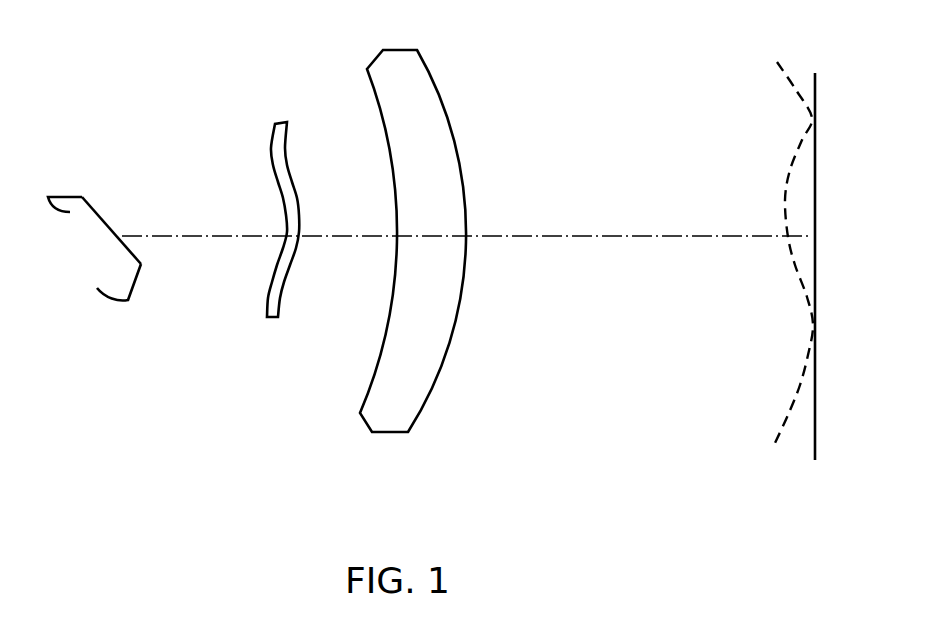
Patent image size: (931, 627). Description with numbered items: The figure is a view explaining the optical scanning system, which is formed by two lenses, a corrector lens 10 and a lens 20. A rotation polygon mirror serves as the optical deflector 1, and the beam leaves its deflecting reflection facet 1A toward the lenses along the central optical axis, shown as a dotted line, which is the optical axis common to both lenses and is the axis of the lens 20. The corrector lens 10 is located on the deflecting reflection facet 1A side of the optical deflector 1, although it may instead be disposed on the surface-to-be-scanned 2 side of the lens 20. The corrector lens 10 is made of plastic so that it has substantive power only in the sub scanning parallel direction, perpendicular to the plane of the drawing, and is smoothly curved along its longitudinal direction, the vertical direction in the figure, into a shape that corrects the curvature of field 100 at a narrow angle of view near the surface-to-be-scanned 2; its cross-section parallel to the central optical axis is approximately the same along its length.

The optical deflector 1 is at (57, 227).
The deflecting reflection facet 1A is at (105, 220).
The corrector lens 10 is at (288, 172).
The lens 20 is at (455, 142).
The curvature of field 100 is at (800, 83).
The surface-to-be-scanned 2 is at (817, 163).